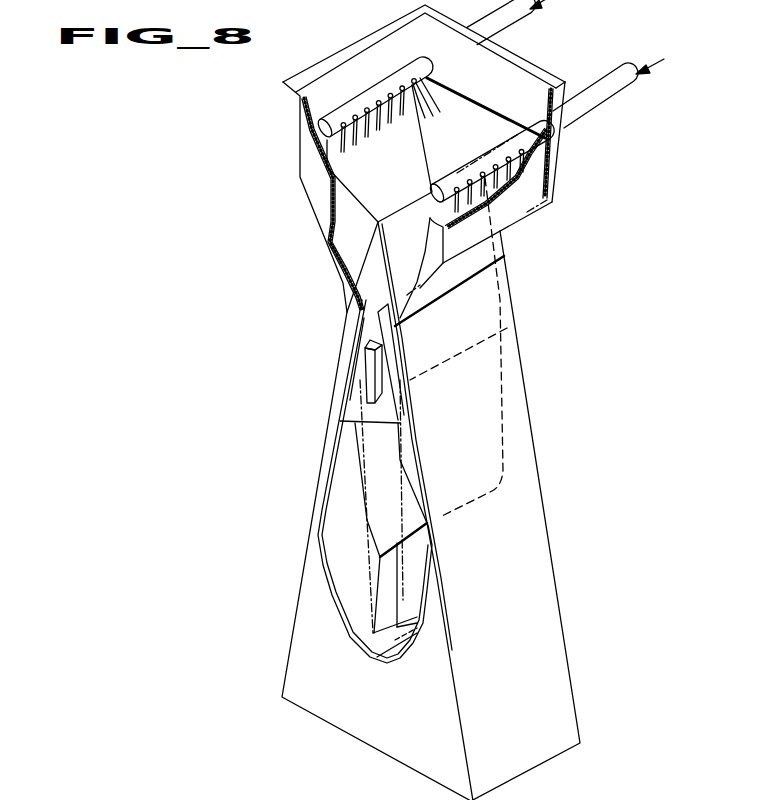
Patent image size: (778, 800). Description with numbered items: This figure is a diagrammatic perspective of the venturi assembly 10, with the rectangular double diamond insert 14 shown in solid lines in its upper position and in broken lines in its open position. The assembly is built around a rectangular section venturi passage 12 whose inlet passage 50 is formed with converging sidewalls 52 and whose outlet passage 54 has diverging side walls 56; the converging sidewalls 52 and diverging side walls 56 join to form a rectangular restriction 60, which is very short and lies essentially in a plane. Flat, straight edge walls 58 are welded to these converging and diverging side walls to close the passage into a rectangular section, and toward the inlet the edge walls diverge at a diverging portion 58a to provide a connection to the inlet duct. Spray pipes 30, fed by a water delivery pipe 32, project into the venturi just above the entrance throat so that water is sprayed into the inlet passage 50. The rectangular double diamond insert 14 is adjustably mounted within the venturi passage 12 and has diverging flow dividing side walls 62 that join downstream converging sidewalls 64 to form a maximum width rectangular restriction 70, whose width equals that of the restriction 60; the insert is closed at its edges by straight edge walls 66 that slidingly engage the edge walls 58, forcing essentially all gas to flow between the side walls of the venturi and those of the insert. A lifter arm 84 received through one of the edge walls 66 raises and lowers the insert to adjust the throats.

The venturi assembly 10 is at (592, 259).
The venturi passage 12 is at (330, 299).
The rectangular double diamond insert 14 is at (362, 496).
The spray pipes 30 is at (505, 147).
The water delivery pipe 32 is at (600, 82).
The inlet passage 50 is at (350, 237).
The converging sidewalls 52 is at (343, 203).
The outlet passage 54 is at (343, 463).
The diverging side walls 56 is at (546, 563).
The straight edge walls 58 is at (457, 97).
The diverging portion of edge walls 58a is at (294, 108).
The rectangular restriction 60 is at (487, 280).
The diverging flow dividing side walls 62 is at (385, 278).
The downstream converging sidewalls 64 is at (400, 418).
The straight edge walls of insert 66 is at (376, 322).
The maximum width rectangular restriction 70 is at (365, 346).
The lifter arm 84 is at (377, 378).